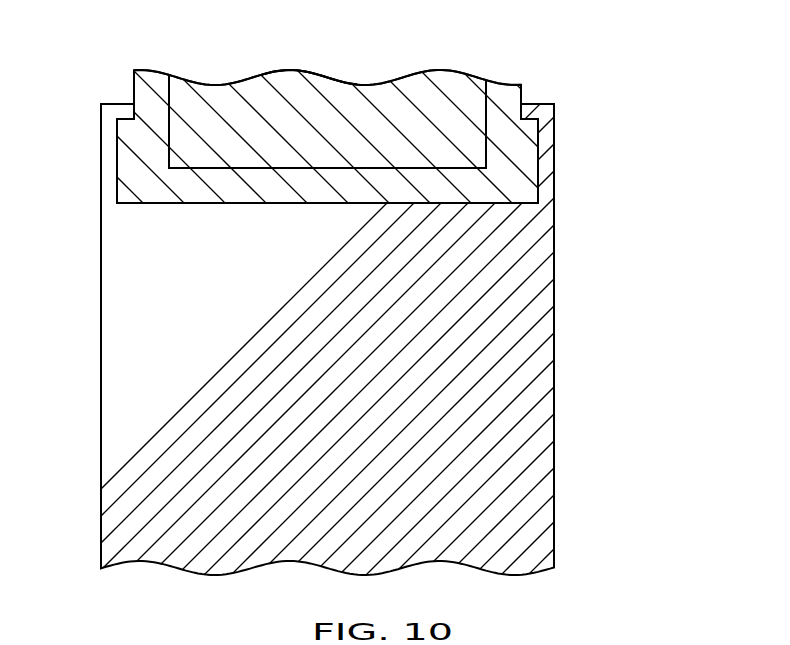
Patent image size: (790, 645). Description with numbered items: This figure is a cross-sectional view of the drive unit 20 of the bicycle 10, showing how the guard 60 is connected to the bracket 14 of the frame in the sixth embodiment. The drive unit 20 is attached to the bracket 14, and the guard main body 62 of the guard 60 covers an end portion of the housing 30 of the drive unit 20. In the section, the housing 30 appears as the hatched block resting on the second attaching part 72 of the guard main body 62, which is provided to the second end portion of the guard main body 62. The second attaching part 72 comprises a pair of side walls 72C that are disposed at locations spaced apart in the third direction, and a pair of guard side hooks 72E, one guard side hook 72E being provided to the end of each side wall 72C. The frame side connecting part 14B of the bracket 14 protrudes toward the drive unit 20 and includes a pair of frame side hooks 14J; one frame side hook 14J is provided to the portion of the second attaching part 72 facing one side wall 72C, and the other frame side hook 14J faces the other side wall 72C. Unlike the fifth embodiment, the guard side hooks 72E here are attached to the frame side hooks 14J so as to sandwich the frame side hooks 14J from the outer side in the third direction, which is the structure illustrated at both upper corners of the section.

The bicycle 10 is at (395, 290).
The bracket 14 is at (341, 105).
The frame side connecting part 14B is at (148, 90).
The frame side hook 14J is at (113, 135).
The drive unit 20 is at (327, 89).
The housing 30 is at (325, 68).
The guard 60 is at (400, 328).
The guard main body 62 is at (548, 528).
The second attaching part 72 is at (400, 328).
The side wall 72C is at (100, 413).
The guard side hook 72E is at (116, 104).